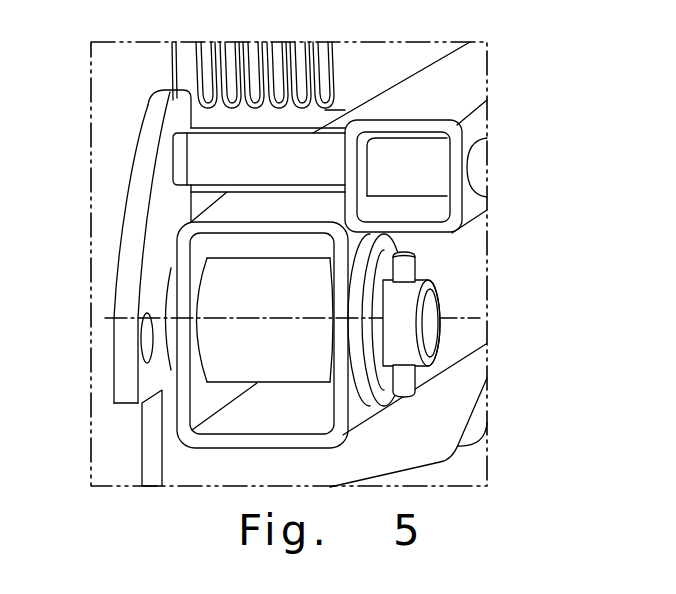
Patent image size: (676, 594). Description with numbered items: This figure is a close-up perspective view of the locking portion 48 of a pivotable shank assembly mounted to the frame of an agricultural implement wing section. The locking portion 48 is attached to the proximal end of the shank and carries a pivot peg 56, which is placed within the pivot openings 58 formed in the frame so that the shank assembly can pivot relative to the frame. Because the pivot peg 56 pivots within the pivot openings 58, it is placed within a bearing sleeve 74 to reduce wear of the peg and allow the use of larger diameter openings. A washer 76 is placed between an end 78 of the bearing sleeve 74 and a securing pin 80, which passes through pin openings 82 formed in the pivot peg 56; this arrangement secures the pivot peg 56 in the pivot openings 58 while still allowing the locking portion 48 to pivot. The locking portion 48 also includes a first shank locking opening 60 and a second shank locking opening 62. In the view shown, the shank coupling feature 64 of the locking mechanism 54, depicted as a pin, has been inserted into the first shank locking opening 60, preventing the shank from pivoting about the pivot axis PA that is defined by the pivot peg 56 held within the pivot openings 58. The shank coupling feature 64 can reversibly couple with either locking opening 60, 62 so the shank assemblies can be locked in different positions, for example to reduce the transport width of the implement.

The locking mechanism 54 is at (487, 76).
The locking portion 48 is at (142, 132).
The pivot peg 56 is at (437, 312).
The pivot openings 58 is at (207, 260).
The first shank locking opening 60 is at (172, 165).
The second shank locking opening 62 is at (158, 367).
The shank coupling feature 64 is at (335, 133).
The bearing sleeve 74 is at (262, 272).
The washer 76 is at (407, 250).
The end of bearing sleeve 78 is at (358, 272).
The securing pin 80 is at (412, 262).
The pin openings 82 is at (412, 272).
The pivot axis PA is at (268, 322).